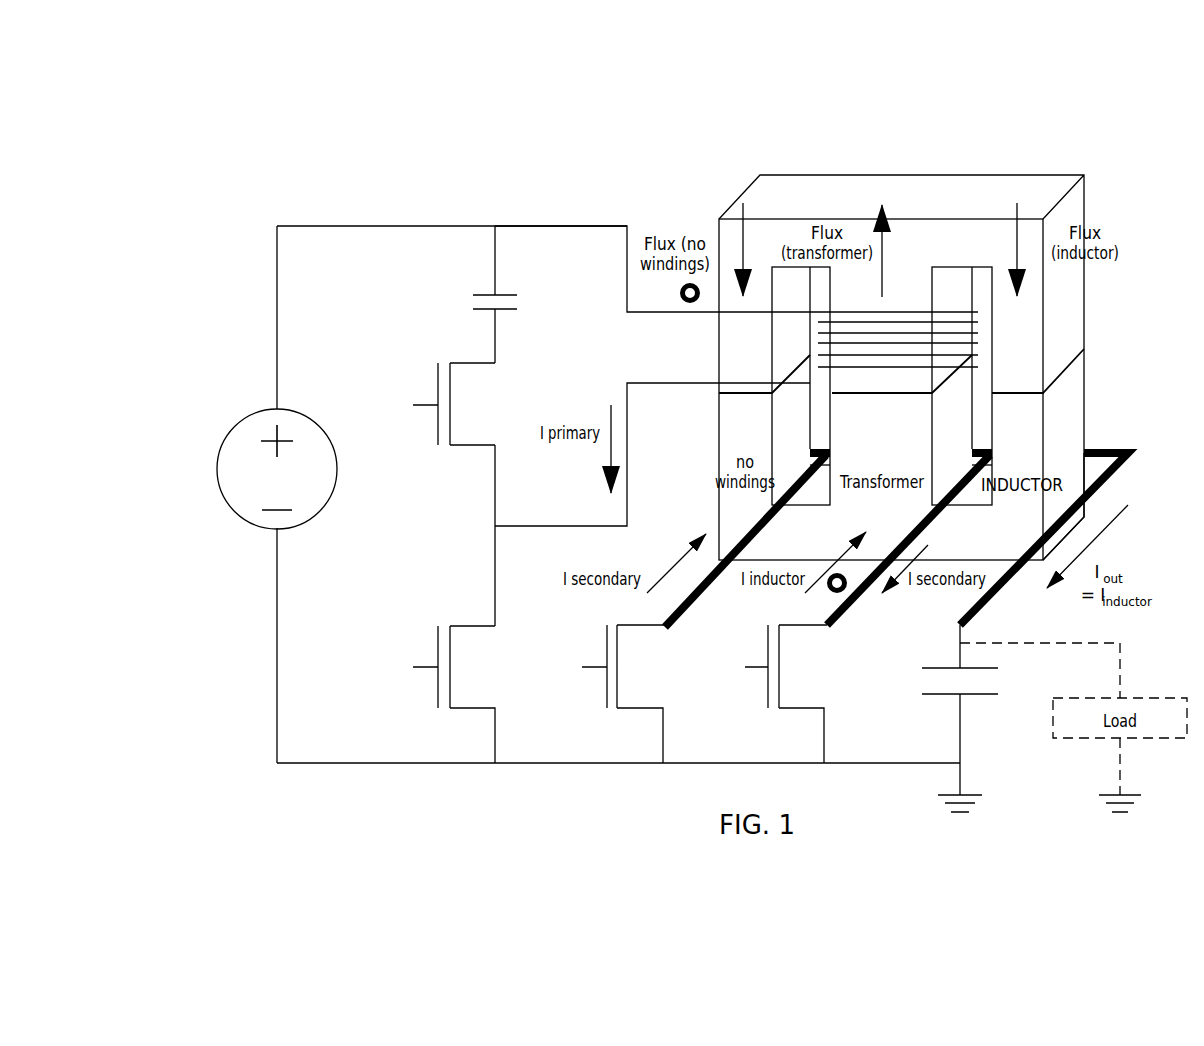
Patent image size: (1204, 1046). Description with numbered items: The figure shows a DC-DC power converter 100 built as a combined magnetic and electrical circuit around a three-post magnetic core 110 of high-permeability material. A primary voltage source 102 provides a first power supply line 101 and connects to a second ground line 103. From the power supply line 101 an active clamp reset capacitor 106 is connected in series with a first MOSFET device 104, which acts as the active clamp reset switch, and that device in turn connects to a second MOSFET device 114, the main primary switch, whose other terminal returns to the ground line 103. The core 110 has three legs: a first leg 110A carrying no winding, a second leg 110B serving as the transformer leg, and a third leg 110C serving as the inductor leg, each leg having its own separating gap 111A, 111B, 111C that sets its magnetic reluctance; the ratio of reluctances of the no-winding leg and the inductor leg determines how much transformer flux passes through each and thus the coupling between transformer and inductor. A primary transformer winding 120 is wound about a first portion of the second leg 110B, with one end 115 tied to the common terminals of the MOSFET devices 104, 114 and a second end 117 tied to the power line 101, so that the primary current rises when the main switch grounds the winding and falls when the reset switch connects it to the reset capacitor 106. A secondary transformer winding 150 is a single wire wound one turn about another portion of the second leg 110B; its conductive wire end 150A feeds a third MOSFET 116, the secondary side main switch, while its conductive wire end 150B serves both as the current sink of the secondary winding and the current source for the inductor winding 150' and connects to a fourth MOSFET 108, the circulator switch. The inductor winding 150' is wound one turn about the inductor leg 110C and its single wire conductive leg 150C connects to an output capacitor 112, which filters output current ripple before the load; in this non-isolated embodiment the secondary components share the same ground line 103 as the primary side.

The DC-DC power converter 100 is at (221, 157).
The first power supply line 101 is at (277, 283).
The primary voltage source 102 is at (241, 419).
The second ground line 103 is at (277, 617).
The first MOSFET device 104 is at (437, 355).
The active clamp reset capacitor 106 is at (469, 301).
The fourth MOSFET 108 is at (752, 688).
The magnetic core 110 is at (1087, 311).
The first leg 110A is at (757, 327).
The second leg 110B is at (906, 282).
The third leg 110C is at (1080, 393).
The separating gap 111A is at (778, 397).
The separating gap 111B is at (945, 389).
The separating gap 111C is at (1072, 362).
The output capacitor 112 is at (937, 700).
The second MOSFET device 114 is at (437, 623).
The first end of primary winding 115 is at (658, 383).
The third MOSFET 116 is at (585, 683).
The second end of primary winding 117 is at (549, 226).
The primary transformer winding 120 is at (950, 296).
The secondary transformer winding 150 is at (1059, 430).
The inductor winding 150' is at (1074, 539).
The conductive wire end 150A is at (702, 574).
The conductive wire end 150B is at (832, 628).
The single wire conductive leg 150C is at (955, 620).